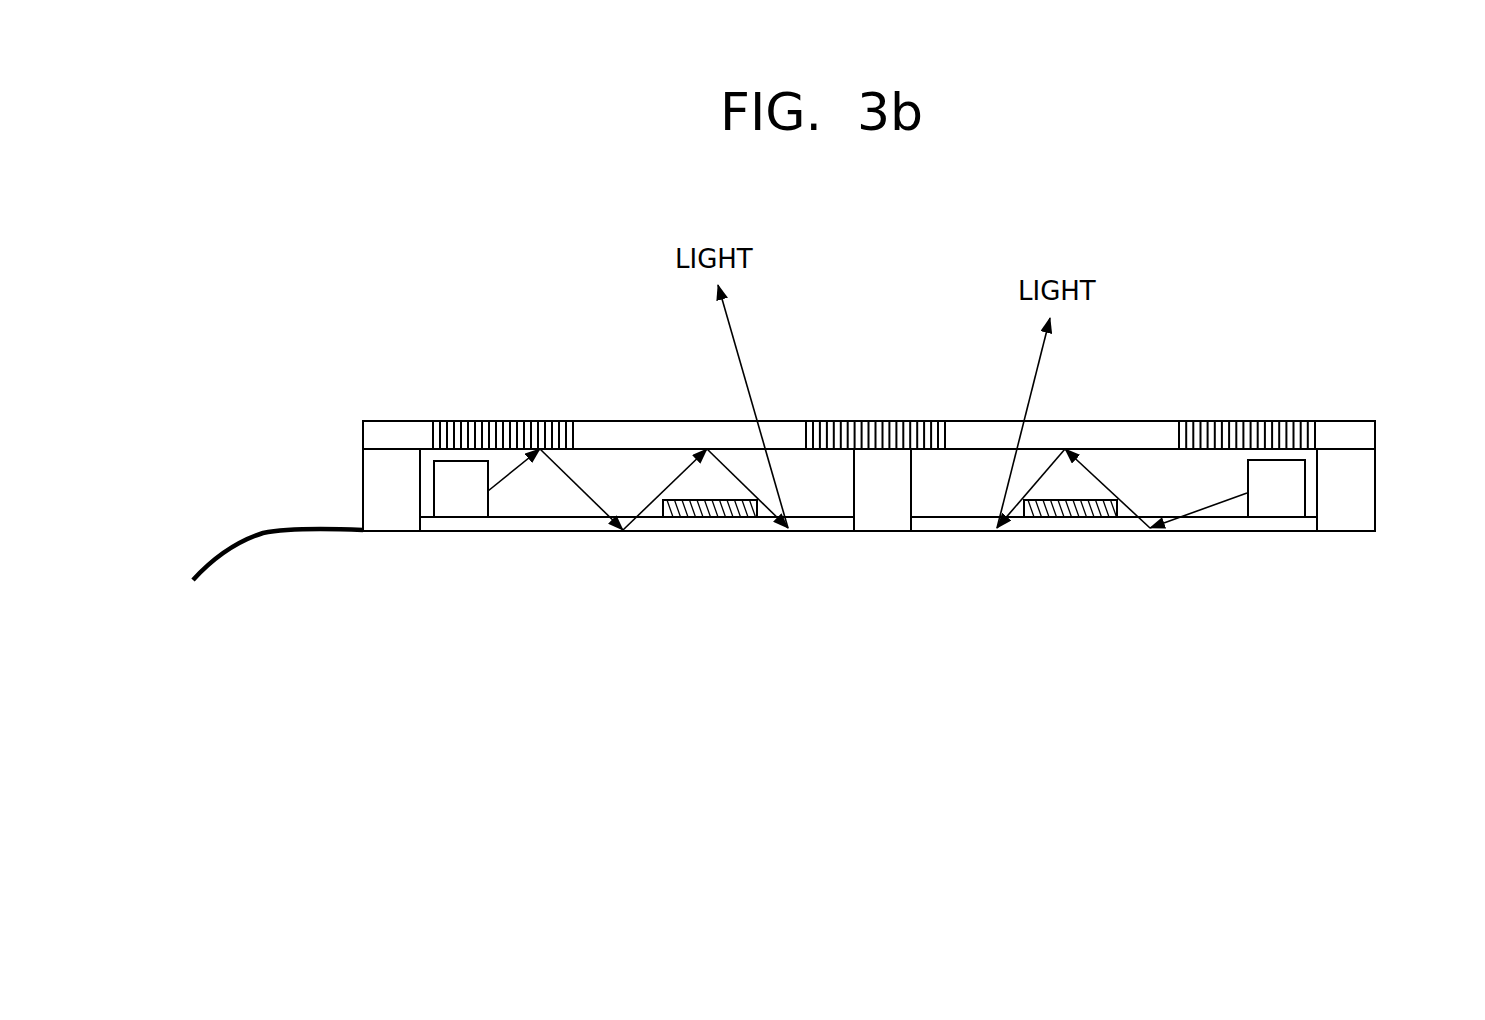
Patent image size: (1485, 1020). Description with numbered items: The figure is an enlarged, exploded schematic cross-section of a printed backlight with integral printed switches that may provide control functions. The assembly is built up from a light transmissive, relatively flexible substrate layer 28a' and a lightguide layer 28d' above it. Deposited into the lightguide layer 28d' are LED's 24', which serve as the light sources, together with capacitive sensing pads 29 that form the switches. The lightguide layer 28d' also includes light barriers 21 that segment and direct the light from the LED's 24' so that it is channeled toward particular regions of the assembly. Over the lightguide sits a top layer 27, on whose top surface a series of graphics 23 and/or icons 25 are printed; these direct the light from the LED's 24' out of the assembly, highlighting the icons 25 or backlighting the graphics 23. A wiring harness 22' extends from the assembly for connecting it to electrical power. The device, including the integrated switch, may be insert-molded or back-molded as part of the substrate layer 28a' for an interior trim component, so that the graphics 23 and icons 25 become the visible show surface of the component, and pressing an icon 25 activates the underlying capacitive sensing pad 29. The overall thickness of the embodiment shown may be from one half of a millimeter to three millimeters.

The light barrier 21 is at (877, 458).
The wiring harness 22' is at (254, 498).
The graphics 23 is at (451, 437).
The LED 24' is at (840, 407).
The icon 25 is at (615, 425).
The top layer 27 is at (1350, 435).
The substrate layer 28a' is at (1119, 547).
The lightguide layer 28d' is at (647, 394).
The capacitive sensing pad 29 is at (718, 510).